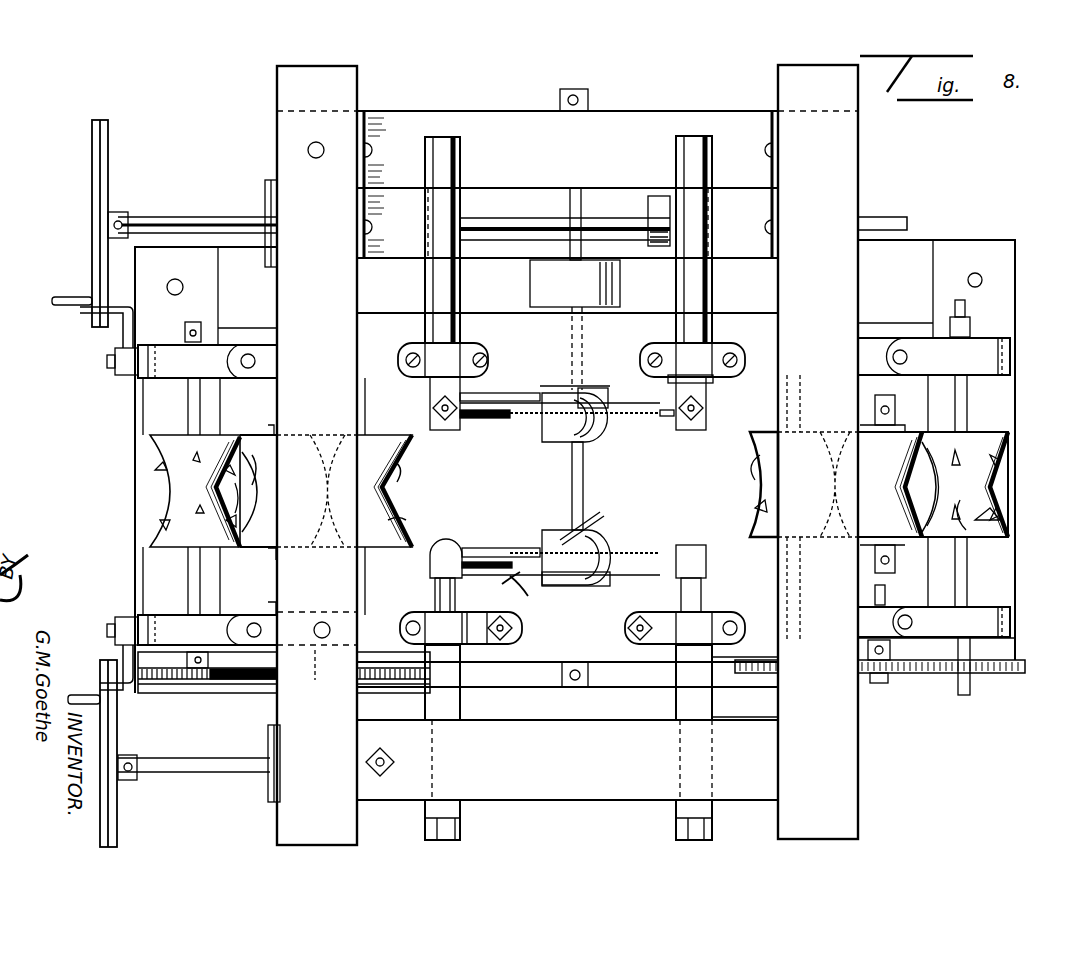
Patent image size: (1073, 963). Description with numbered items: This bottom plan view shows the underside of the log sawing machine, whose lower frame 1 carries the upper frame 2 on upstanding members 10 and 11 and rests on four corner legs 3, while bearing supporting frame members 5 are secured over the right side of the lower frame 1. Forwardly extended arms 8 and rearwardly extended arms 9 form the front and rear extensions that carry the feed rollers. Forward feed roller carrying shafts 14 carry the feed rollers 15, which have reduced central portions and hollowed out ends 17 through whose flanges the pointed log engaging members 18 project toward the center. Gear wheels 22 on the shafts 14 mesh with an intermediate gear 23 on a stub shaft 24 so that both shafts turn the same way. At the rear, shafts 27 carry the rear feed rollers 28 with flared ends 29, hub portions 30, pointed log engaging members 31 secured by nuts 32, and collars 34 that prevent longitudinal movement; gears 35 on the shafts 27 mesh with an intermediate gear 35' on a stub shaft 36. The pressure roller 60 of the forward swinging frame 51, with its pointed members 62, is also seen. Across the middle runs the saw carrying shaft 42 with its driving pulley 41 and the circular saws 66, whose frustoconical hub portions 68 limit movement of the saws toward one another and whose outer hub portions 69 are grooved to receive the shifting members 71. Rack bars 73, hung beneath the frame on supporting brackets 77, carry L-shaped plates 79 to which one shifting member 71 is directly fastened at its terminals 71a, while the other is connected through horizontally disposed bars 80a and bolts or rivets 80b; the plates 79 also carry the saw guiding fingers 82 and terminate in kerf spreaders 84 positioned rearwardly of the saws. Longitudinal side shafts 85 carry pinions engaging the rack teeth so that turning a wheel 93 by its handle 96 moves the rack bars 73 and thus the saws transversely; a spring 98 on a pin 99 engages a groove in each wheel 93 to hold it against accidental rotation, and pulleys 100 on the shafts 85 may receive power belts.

The lower frame 1 is at (567, 444).
The upper frame 2 is at (1026, 270).
The corner legs 3 is at (366, 138).
The bearing supporting frame members 5 is at (560, 660).
The forwardly extended arms 8 is at (247, 495).
The rearwardly extended arms 9 is at (934, 487).
The upstanding members 10 is at (137, 382).
The upstanding members 11 is at (1010, 351).
The forward feed roller carrying shafts 14 is at (195, 408).
The feed rollers 15 is at (178, 540).
The hollowed out ends 17 is at (165, 436).
The pointed log engaging members 18 is at (415, 492).
The gear wheels 22 is at (206, 684).
The intermediate gear 23 is at (270, 684).
The stub shaft 24 is at (203, 330).
The rear feed roller shafts 27 is at (800, 557).
The rear feed rollers 28 is at (1000, 448).
The flared ends 29 is at (994, 534).
The hub portions 30 is at (980, 543).
The pointed log engaging members 31 is at (748, 480).
The nuts 32 is at (954, 484).
The collars 34 is at (970, 325).
The gears 35 is at (873, 710).
The intermediate gear 35' is at (924, 681).
The stub shaft 36 is at (872, 685).
The driving pulley 41 is at (530, 284).
The saw carrying shaft 42 is at (584, 473).
The forward swinging frame 51 is at (866, 410).
The pressure roller 60 is at (264, 464).
The pointed log engaging members 62 is at (240, 496).
The circular saws 66 is at (640, 420).
The hub portions 68 is at (566, 430).
The hub portions 69 is at (604, 400).
The shifting members 71 is at (522, 397).
The terminals 71a is at (432, 410).
The rack bars 73 is at (455, 160).
The supporting brackets 77 is at (488, 352).
The L-shaped plates 79 is at (445, 545).
The horizontally disposed bars 80a is at (575, 540).
The bolts or rivets 80b is at (512, 585).
The saw guiding fingers 82 is at (490, 420).
The kerf spreaders 84 is at (672, 420).
The longitudinal side shafts 85 is at (588, 222).
The wheel 93 is at (92, 265).
The handle 96 is at (58, 305).
The spring 98 is at (122, 328).
The pin 99 is at (115, 368).
The pulleys 100 is at (265, 190).